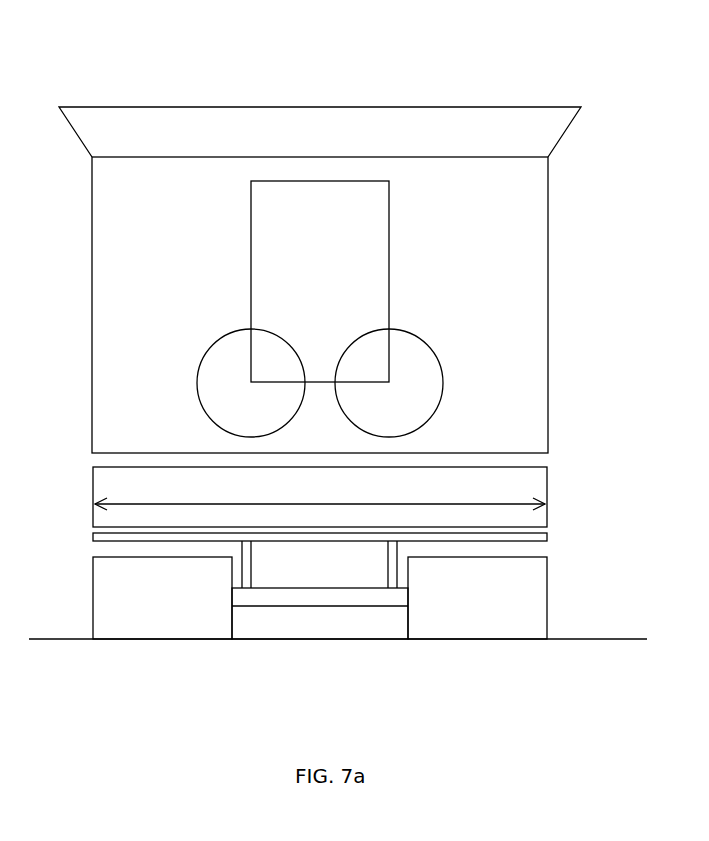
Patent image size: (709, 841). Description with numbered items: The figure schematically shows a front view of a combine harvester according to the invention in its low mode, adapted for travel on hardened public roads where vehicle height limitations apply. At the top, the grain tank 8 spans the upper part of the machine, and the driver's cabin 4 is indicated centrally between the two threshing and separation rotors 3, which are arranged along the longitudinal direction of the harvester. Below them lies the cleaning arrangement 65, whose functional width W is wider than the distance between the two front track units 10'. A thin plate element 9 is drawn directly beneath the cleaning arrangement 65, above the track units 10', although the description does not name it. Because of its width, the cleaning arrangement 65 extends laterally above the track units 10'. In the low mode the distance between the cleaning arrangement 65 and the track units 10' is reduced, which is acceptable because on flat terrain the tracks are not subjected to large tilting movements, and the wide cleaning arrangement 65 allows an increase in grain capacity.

The grain tank 8 is at (133, 127).
The driver's cabin 4 is at (366, 267).
The threshing and separation rotors 3 is at (220, 370).
The cleaning arrangement 65 is at (544, 482).
The plate 9 is at (538, 536).
The front track units 10' is at (333, 642).